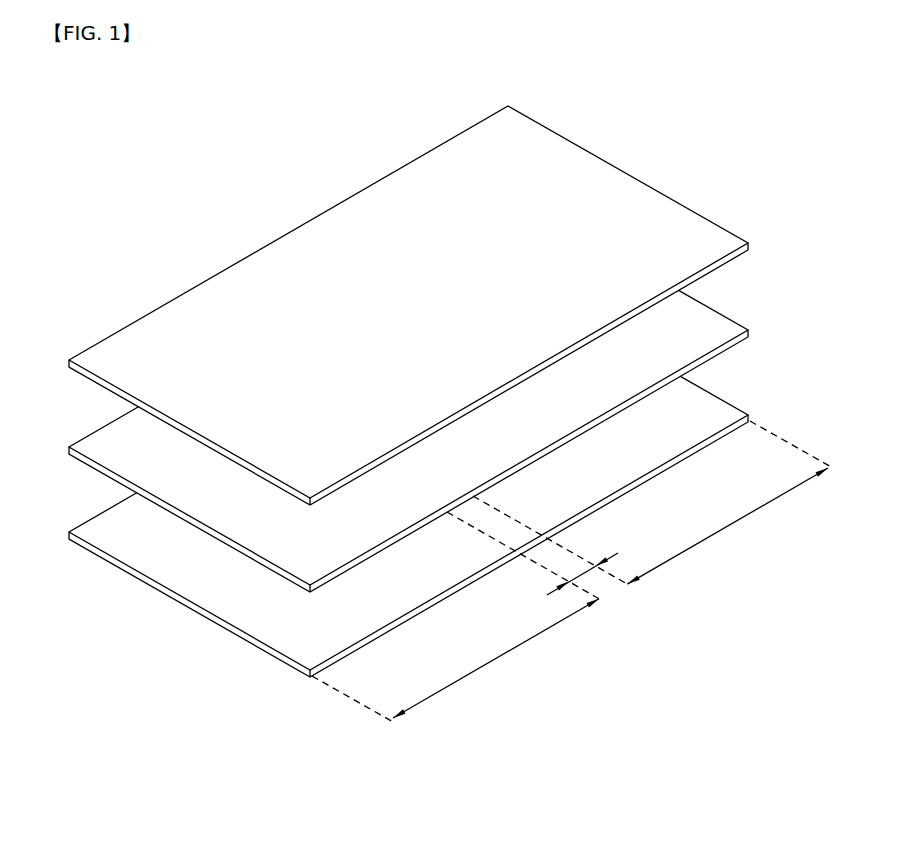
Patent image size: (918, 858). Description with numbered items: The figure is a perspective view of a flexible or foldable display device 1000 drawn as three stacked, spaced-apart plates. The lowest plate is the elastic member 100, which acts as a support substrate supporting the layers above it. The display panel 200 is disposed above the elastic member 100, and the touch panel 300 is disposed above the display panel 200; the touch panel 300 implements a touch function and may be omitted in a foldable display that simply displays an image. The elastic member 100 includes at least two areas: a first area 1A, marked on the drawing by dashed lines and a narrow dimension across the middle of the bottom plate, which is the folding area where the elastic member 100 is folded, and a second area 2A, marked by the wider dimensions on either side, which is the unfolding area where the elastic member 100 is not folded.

The flexible display device 1000 is at (72, 203).
The touch panel 300 is at (102, 353).
The display panel 200 is at (102, 440).
The elastic member 100 is at (102, 526).
The first area 1A is at (582, 565).
The second area 2A is at (572, 572).